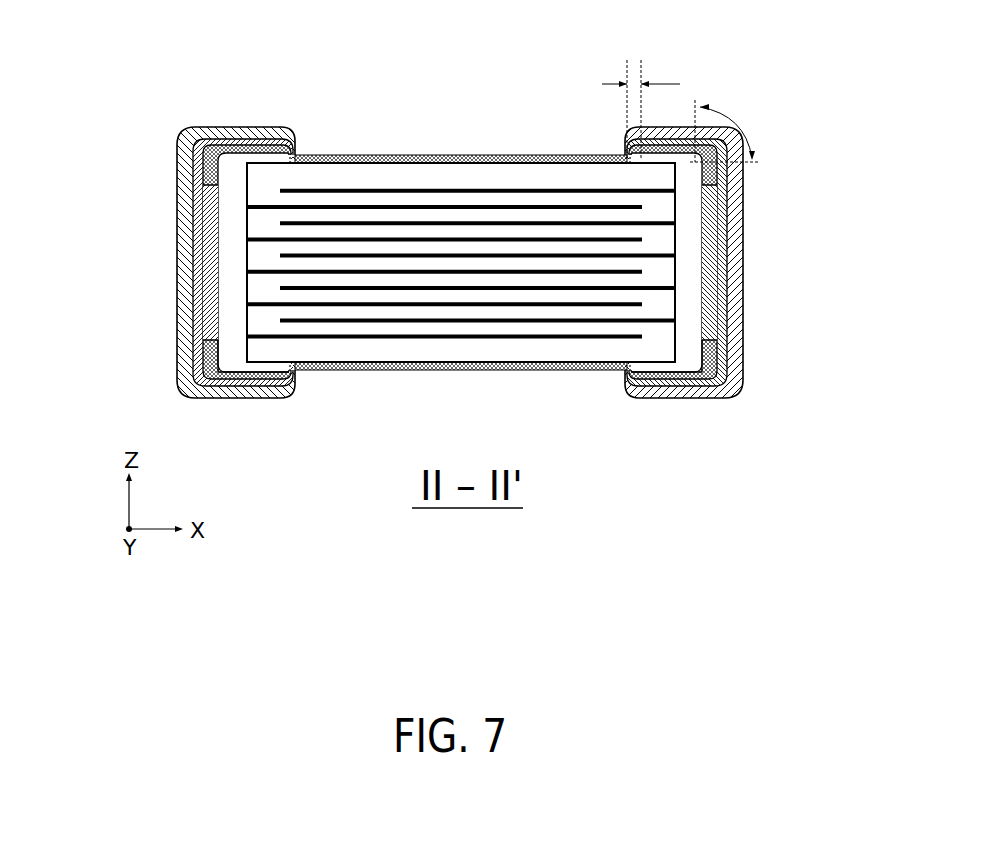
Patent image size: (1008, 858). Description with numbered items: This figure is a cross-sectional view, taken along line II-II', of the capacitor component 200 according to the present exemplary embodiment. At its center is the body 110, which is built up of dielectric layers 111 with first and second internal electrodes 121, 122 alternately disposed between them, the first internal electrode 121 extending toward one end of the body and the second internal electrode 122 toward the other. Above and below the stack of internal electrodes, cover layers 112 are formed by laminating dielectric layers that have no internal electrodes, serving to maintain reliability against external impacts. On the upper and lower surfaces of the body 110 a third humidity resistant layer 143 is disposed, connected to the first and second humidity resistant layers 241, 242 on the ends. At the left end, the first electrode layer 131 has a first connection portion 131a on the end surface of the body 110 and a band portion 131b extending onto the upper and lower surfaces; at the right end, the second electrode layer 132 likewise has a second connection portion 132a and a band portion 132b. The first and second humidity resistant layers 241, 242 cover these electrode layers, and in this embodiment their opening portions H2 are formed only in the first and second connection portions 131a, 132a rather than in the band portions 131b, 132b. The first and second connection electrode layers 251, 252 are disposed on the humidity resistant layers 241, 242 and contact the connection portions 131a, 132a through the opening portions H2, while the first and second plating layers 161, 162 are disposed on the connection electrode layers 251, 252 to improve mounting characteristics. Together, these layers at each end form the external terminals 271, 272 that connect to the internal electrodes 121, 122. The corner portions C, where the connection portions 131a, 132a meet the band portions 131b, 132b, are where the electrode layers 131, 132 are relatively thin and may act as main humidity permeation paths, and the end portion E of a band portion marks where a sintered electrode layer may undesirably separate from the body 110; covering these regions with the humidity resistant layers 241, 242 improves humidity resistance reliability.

The capacitor component 200 is at (480, 50).
The body 110 is at (565, 160).
The dielectric layer 111 is at (352, 198).
The cover layer 112 is at (483, 172).
The first internal electrode 121 is at (405, 203).
The second internal electrode 122 is at (440, 188).
The third humidity resistant layer 143 is at (535, 160).
The first electrode layer 131 is at (178, 276).
The first connection portion 131a is at (233, 348).
The band portion 131b is at (250, 369).
The second electrode layer 132 is at (741, 271).
The second connection portion 132a is at (690, 340).
The band portion 132b is at (675, 370).
The first plating layer 161 is at (177, 305).
The second plating layer 162 is at (743, 295).
The first humidity resistant layer 241 is at (177, 200).
The second humidity resistant layer 242 is at (743, 192).
The first connection electrode layer 251 is at (177, 238).
The second connection electrode layer 252 is at (743, 213).
The first external terminal 271 is at (68, 202).
The second external terminal 272 is at (852, 192).
The opening portion H2 is at (225, 276).
The end portion E is at (641, 107).
The corner portion C is at (725, 129).